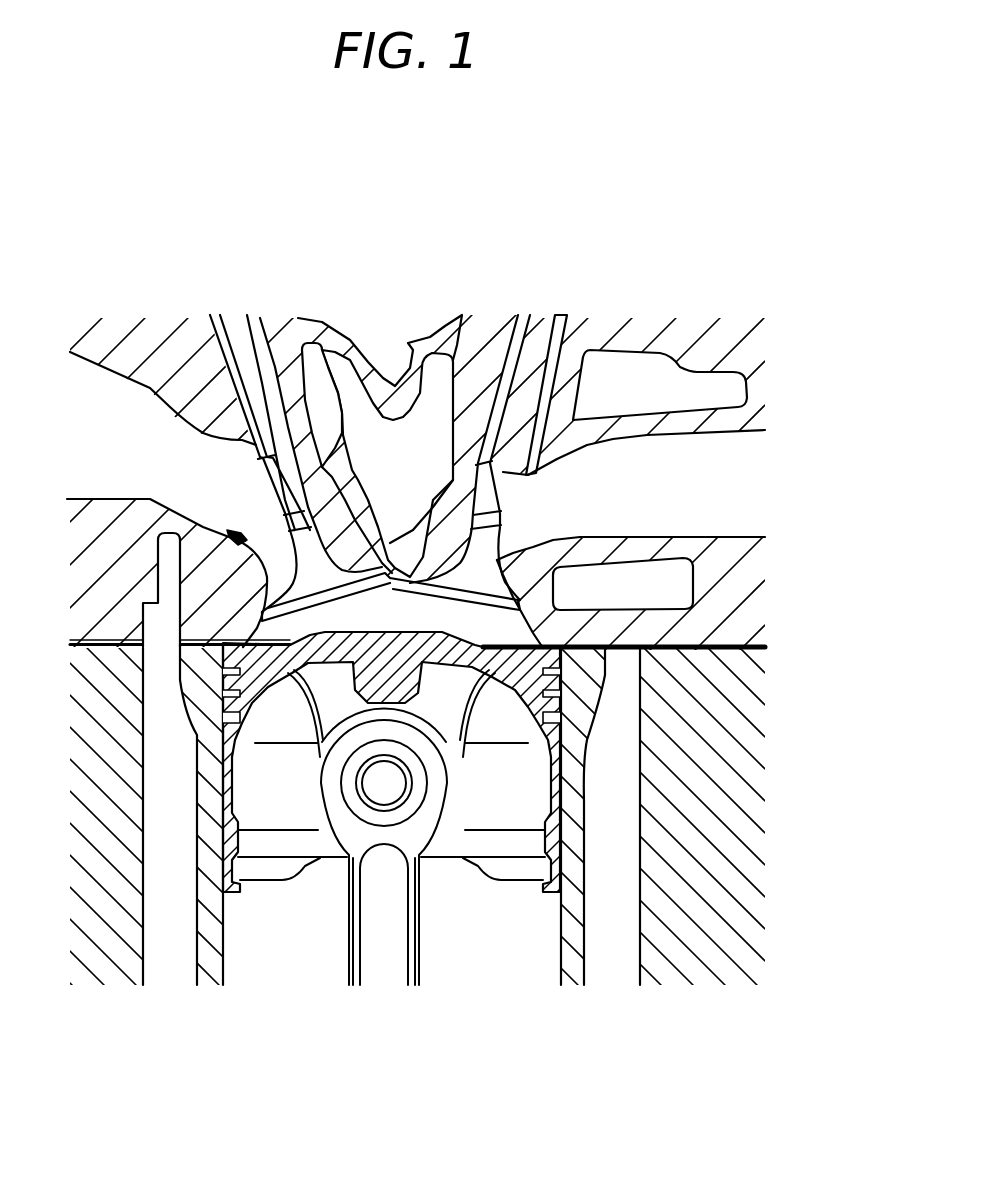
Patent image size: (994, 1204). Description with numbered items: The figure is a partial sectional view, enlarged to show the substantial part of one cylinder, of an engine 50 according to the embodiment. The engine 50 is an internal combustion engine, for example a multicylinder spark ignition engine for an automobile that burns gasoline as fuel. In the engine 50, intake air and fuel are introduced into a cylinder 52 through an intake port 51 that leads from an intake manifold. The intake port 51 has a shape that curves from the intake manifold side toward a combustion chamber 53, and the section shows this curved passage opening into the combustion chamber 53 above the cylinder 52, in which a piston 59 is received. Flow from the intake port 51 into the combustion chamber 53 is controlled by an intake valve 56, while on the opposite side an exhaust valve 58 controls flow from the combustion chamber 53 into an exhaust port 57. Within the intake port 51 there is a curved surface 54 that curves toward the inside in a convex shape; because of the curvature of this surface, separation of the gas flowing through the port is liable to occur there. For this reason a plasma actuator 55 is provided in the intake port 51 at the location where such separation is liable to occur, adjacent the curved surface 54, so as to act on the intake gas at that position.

The engine 50 is at (507, 282).
The intake port 51 is at (141, 451).
The cylinder 52 is at (506, 967).
The combustion chamber 53 is at (408, 621).
The curved surface 54 is at (230, 532).
The plasma actuator 55 is at (247, 533).
The intake valve 56 is at (333, 397).
The exhaust port 57 is at (710, 498).
The exhaust valve 58 is at (487, 578).
The piston 59 is at (313, 860).